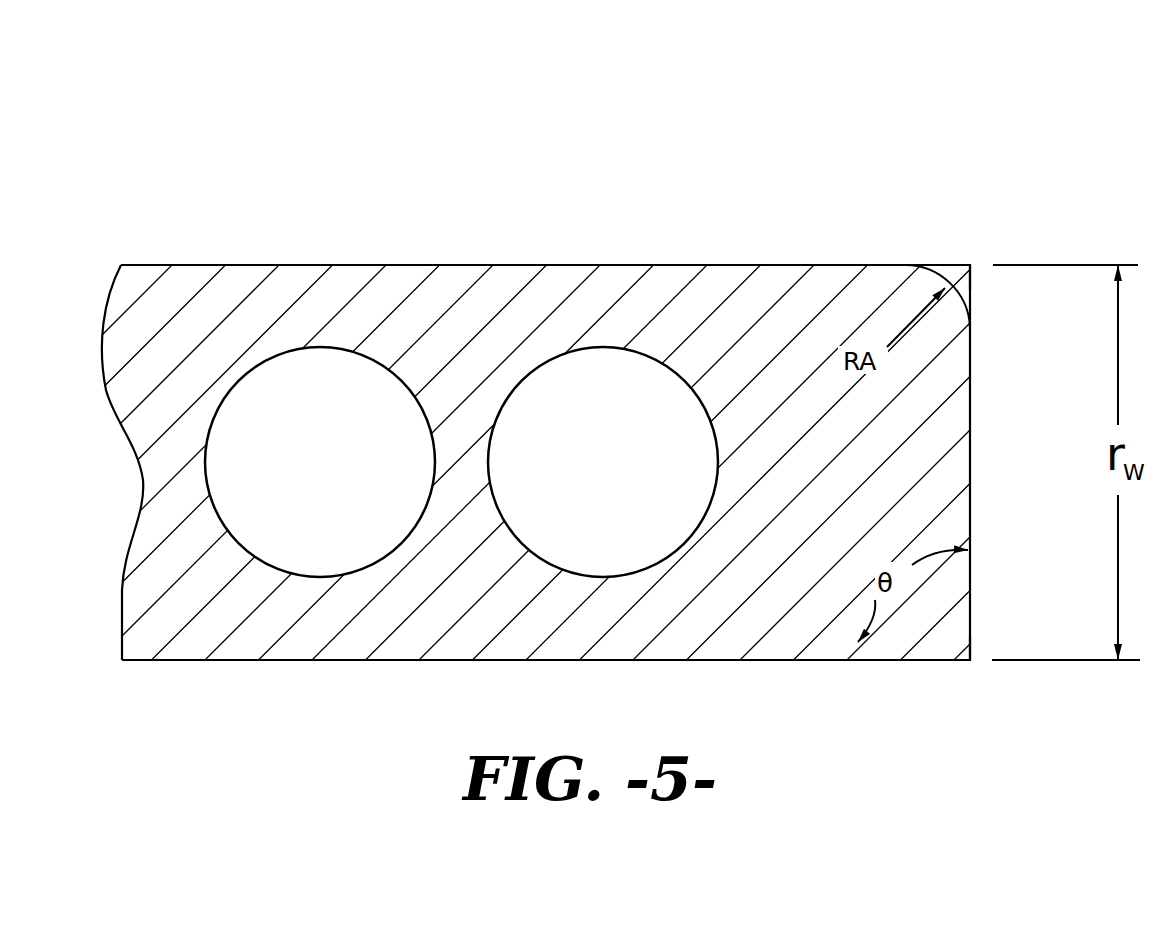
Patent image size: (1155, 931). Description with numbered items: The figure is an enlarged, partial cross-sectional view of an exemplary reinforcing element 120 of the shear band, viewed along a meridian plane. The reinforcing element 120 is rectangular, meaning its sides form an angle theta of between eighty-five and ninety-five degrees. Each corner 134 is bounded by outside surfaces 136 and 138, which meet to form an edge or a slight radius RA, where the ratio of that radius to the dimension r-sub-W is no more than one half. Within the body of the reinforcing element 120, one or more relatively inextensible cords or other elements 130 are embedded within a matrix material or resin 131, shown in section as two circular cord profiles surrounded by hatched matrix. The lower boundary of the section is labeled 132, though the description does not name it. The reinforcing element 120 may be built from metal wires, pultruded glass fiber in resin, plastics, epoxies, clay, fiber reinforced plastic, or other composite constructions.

The reinforcing element 120 is at (342, 112).
The cords 130 is at (288, 390).
The matrix material 131 is at (425, 292).
The bottom surface 132 is at (307, 638).
The corner 134 is at (978, 260).
The outside surface 136 is at (887, 257).
The outside surface 138 is at (980, 325).